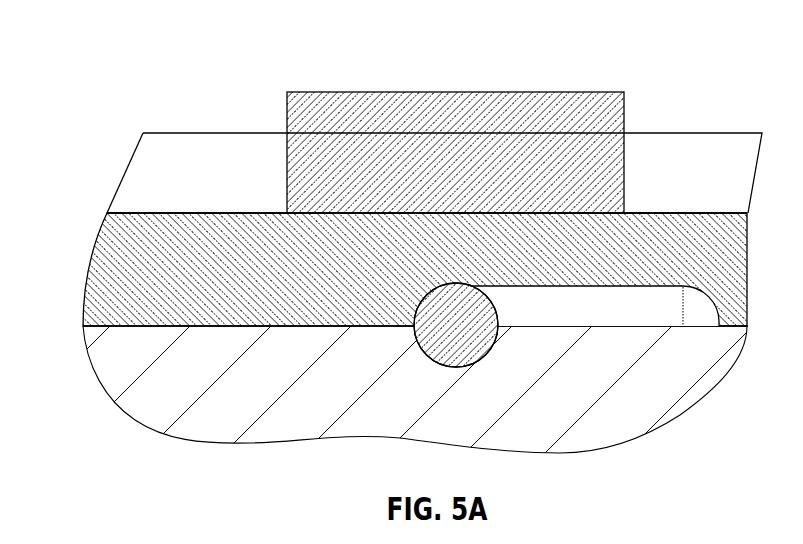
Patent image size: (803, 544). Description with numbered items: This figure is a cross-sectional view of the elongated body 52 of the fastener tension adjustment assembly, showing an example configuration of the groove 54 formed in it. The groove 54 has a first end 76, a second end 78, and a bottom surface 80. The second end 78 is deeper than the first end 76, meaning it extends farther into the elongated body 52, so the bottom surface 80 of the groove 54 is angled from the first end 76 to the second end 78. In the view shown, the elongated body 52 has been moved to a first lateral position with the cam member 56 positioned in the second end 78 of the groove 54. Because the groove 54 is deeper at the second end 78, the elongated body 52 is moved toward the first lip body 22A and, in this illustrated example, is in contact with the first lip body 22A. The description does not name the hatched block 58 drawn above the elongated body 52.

The first lip body 22A is at (133, 410).
The elongated body 52 is at (85, 281).
The groove 54 is at (597, 313).
The cam member 56 is at (430, 343).
The cover block 58 is at (287, 150).
The first end 76 is at (720, 323).
The second end 78 is at (412, 309).
The bottom surface 80 is at (565, 287).